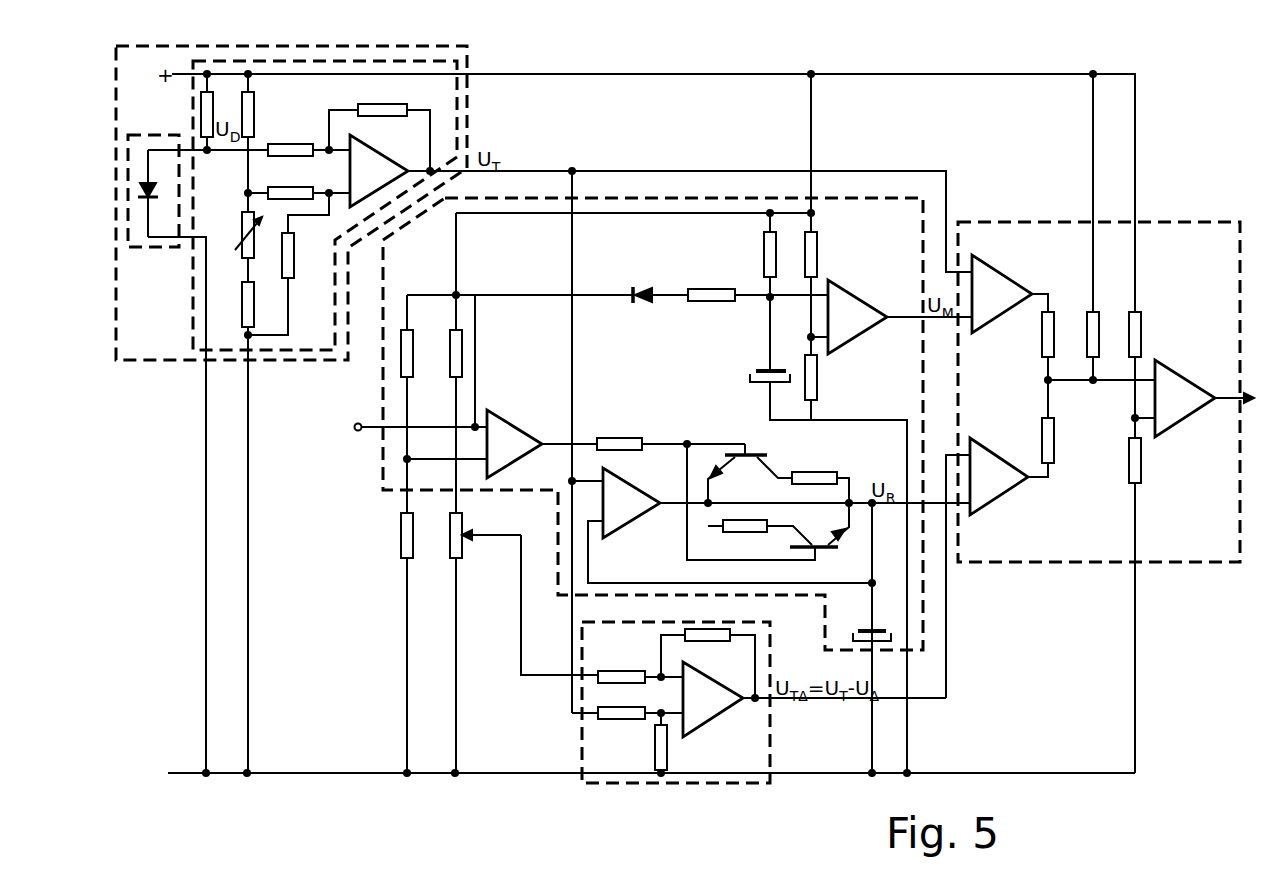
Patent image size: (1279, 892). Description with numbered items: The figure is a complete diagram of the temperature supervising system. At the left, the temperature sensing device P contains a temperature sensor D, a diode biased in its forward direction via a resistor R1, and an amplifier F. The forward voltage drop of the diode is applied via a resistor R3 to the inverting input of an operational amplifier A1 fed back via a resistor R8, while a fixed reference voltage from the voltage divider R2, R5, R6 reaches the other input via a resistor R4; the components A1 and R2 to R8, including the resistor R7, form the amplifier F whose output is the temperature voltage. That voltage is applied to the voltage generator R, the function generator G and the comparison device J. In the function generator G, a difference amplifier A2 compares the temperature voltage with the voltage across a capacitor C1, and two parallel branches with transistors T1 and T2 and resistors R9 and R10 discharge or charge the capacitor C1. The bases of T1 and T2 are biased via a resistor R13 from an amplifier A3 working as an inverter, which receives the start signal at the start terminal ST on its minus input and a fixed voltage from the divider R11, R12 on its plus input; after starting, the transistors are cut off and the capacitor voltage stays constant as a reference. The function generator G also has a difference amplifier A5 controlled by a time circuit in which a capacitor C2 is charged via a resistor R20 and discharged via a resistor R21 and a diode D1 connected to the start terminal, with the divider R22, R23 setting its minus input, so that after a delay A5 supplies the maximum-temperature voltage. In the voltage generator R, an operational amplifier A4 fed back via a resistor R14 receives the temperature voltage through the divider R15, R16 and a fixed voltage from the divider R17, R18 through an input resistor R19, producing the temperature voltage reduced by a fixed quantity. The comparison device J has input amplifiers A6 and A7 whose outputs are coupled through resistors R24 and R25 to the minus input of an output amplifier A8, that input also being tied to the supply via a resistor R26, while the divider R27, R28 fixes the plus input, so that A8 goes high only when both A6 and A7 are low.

The temperature sensing device P is at (291, 203).
The amplifier F is at (325, 205).
The temperature sensor D is at (170, 253).
The function generator G is at (653, 424).
The comparison device J is at (1099, 392).
The voltage generator R is at (772, 745).
The start terminal ST is at (414, 415).
The resistor R1 is at (215, 112).
The resistor R2 is at (256, 112).
The resistor R3 is at (302, 139).
The resistor R4 is at (302, 182).
The resistor R5 is at (230, 250).
The resistor R6 is at (228, 320).
The resistor R7 is at (304, 248).
The resistor R8 is at (392, 99).
The resistor R9 is at (818, 472).
The resistor R10 is at (749, 531).
The resistor R11 is at (416, 338).
The resistor R12 is at (400, 546).
The resistor R13 is at (626, 432).
The resistor R14 is at (700, 642).
The resistor R15 is at (636, 722).
The resistor R16 is at (668, 742).
The resistor R17 is at (447, 364).
The resistor R18 is at (447, 546).
The input resistor R19 is at (622, 674).
The resistor R20 is at (758, 254).
The resistor R21 is at (719, 280).
The resistor R22 is at (818, 258).
The resistor R23 is at (818, 378).
The resistor R24 is at (1054, 430).
The resistor R25 is at (1058, 326).
The resistor R26 is at (1102, 326).
The resistor R27 is at (1142, 326).
The resistor R28 is at (1141, 455).
The operational amplifier A1 is at (376, 137).
The difference amplifier A2 is at (640, 523).
The amplifier A3 is at (521, 433).
The operational amplifier A4 is at (722, 718).
The difference amplifier A5 is at (852, 304).
The input amplifier A6 is at (1010, 505).
The input amplifier A7 is at (1000, 275).
The output amplifier A8 is at (1170, 362).
The transistor T1 is at (771, 449).
The transistor T2 is at (776, 502).
The diode D1 is at (645, 279).
The capacitor C1 is at (870, 626).
The capacitor C2 is at (756, 370).